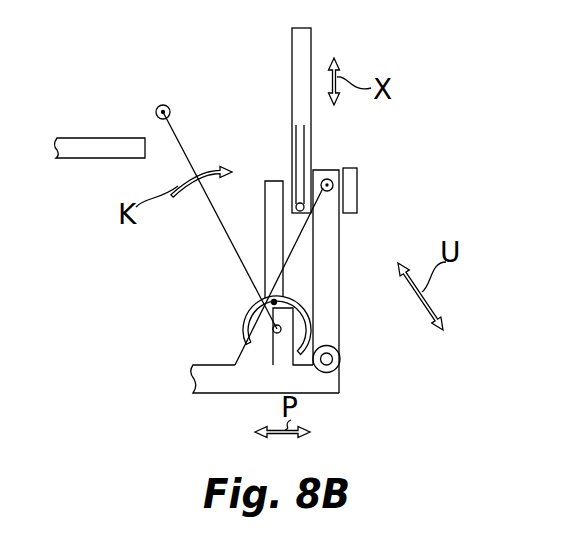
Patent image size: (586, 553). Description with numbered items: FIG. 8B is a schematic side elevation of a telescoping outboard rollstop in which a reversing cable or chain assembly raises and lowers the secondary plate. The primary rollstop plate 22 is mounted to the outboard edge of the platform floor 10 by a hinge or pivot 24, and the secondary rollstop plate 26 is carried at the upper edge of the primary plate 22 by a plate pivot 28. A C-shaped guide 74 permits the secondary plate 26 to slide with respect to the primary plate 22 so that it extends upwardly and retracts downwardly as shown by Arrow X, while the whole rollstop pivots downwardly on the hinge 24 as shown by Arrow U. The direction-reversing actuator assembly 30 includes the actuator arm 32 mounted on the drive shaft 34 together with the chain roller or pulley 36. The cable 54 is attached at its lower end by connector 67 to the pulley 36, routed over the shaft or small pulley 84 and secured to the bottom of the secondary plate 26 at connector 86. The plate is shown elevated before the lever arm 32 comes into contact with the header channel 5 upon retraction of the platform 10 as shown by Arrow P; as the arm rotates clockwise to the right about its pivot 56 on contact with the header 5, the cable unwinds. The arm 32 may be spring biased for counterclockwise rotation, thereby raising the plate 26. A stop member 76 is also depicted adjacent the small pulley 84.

The header channel 5 is at (80, 137).
The platform floor 10 is at (315, 383).
The primary rollstop plate 22 is at (328, 278).
The hinge or pivot 24 is at (343, 358).
The secondary rollstop plate 26 is at (312, 43).
The plate pivot 28 is at (341, 366).
The direction-reversing actuator assembly 30 is at (317, 172).
The actuator arm 32 is at (210, 203).
The drive shaft 34 is at (272, 331).
The chain roller or pulley 36 is at (302, 328).
The cord 54 is at (297, 242).
The pivot pin 56 is at (170, 106).
The connector 67 is at (273, 300).
The C-shaped guide 74 is at (268, 182).
The stop 76 is at (358, 190).
The shaft or small pulley 84 is at (334, 181).
The connector 86 is at (296, 125).